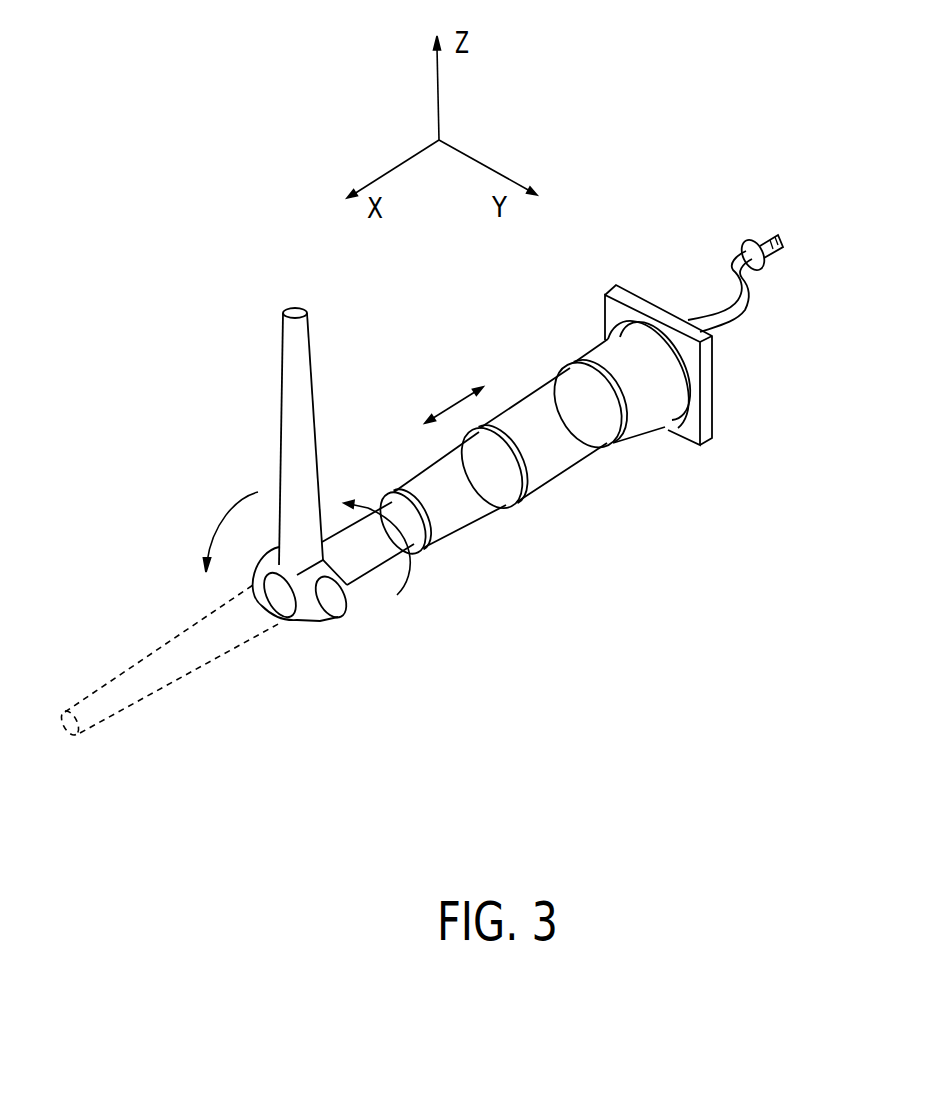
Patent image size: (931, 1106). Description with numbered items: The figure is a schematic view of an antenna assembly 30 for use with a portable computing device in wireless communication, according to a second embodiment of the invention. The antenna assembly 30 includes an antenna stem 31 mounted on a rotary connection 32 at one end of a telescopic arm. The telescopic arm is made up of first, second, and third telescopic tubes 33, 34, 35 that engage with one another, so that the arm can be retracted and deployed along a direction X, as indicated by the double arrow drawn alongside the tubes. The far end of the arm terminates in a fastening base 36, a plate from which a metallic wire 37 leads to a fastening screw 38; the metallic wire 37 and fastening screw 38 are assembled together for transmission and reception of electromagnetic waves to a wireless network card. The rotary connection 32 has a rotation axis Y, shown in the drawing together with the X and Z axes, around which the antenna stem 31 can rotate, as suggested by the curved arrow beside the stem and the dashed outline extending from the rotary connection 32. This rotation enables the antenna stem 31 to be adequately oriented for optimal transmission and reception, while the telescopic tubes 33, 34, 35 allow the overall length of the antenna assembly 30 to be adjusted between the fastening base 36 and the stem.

The antenna assembly 30 is at (677, 613).
The antenna stem 31 is at (302, 361).
The rotary connection 32 is at (326, 616).
The first telescopic tube 33 is at (371, 570).
The second telescopic tube 34 is at (464, 518).
The third telescopic tube 35 is at (558, 464).
The fastening base 36 is at (643, 423).
The metallic wire 37 is at (727, 270).
The fastening screw 38 is at (745, 240).